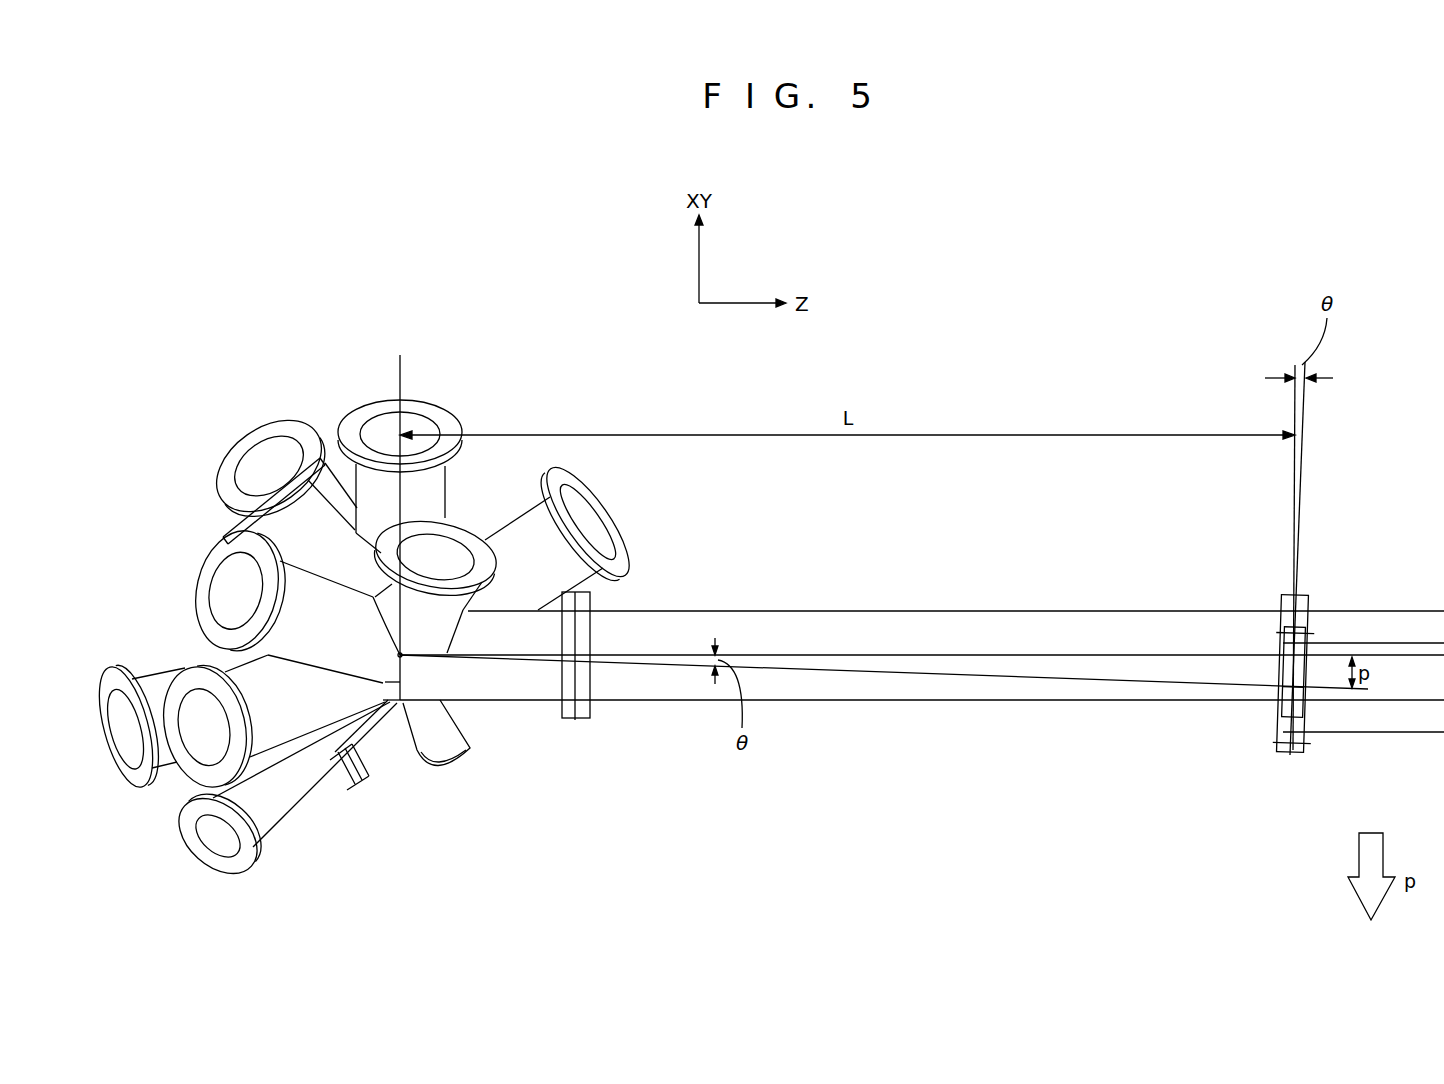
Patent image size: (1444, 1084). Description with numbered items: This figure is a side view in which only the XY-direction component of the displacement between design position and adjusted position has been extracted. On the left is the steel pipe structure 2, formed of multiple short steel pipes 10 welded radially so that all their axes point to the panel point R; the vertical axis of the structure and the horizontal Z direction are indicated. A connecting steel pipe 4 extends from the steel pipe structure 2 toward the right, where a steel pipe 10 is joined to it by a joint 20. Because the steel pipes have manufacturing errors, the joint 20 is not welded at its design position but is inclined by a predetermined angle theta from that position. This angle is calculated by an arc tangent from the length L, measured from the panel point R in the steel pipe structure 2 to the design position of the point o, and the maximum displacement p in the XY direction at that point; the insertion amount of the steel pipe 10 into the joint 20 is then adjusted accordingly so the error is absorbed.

The steel pipe structure 2 is at (314, 360).
The connecting steel pipe 4 is at (814, 612).
The steel pipe 10 is at (494, 683).
The joint 20 is at (575, 721).